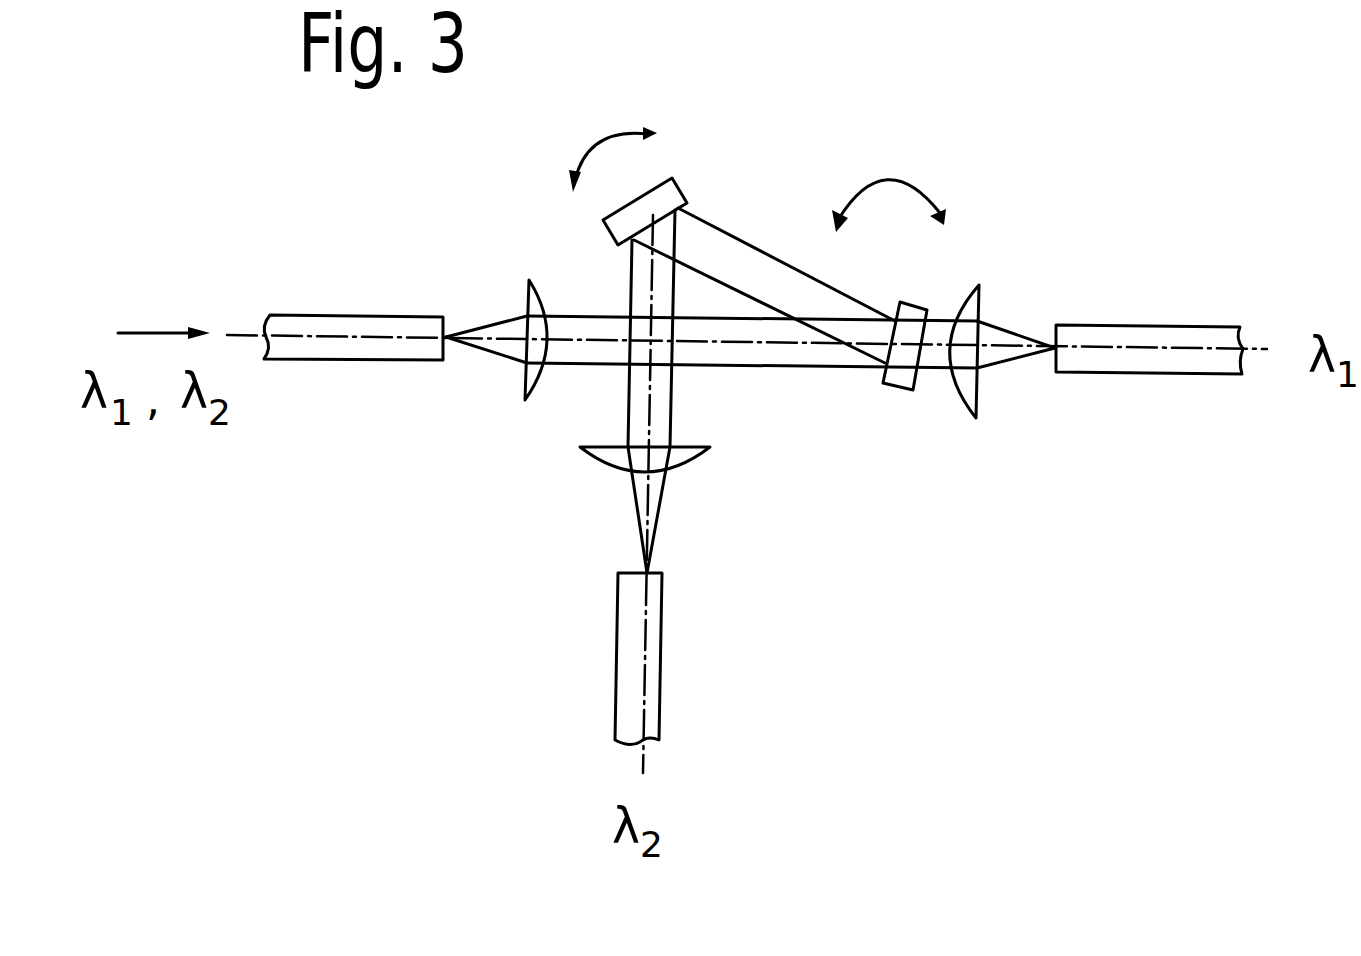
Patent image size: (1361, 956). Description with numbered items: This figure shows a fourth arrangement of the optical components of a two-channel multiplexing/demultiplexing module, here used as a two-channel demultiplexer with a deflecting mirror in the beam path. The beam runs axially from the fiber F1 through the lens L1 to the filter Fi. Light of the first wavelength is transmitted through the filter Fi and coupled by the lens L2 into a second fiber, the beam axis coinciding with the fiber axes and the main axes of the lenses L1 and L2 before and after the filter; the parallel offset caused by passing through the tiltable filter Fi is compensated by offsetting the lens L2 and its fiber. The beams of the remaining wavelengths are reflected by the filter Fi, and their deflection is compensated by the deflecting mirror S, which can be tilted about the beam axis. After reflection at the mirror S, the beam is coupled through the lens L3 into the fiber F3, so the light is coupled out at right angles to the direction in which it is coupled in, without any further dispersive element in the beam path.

The fiber F1 is at (353, 305).
The lens L1 is at (517, 304).
The mirror S is at (646, 186).
The filter Fi is at (889, 285).
The lens L2 is at (980, 320).
The lens L3 is at (681, 451).
The fiber F3 is at (681, 659).